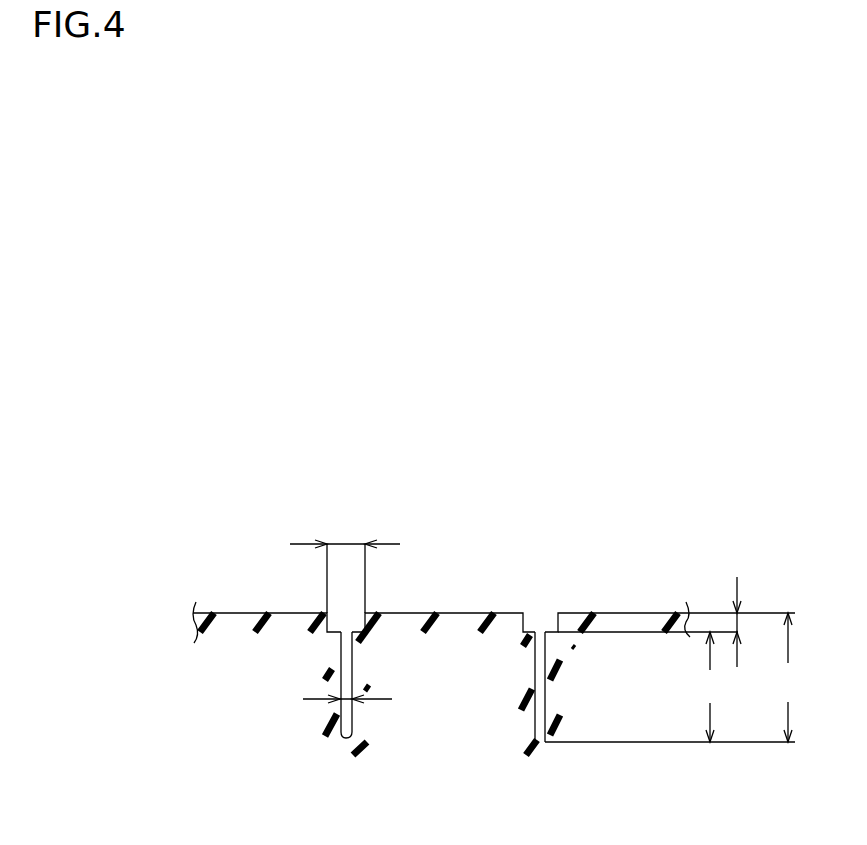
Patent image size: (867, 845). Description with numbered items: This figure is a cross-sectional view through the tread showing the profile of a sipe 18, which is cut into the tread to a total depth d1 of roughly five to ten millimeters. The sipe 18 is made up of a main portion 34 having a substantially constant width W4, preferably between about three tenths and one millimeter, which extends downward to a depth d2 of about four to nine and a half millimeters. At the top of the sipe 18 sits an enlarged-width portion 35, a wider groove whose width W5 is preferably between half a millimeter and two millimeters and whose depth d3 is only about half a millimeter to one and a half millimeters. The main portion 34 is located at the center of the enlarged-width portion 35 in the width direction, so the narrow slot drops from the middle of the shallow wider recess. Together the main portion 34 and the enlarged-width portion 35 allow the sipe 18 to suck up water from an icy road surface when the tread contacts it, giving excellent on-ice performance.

The sipe 18 is at (428, 601).
The main portion 34 is at (340, 662).
The enlarged-width portion 35 is at (341, 620).
The width of main portion W4 is at (337, 707).
The width of enlarged-width portion W5 is at (345, 542).
The depth of sipe d1 is at (790, 677).
The depth of main portion d2 is at (709, 687).
The depth of enlarged-width portion d3 is at (738, 622).